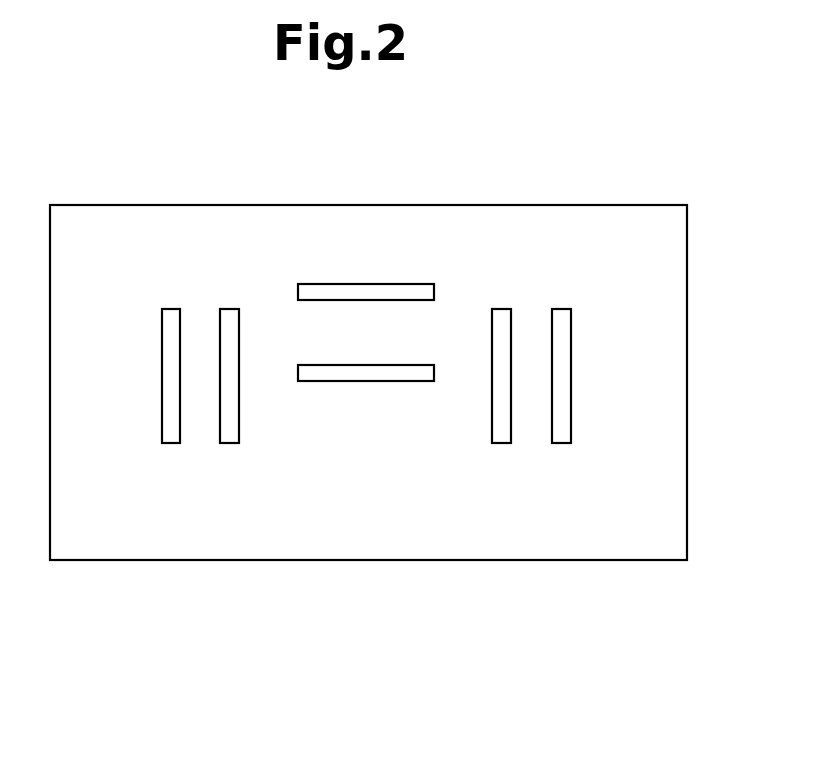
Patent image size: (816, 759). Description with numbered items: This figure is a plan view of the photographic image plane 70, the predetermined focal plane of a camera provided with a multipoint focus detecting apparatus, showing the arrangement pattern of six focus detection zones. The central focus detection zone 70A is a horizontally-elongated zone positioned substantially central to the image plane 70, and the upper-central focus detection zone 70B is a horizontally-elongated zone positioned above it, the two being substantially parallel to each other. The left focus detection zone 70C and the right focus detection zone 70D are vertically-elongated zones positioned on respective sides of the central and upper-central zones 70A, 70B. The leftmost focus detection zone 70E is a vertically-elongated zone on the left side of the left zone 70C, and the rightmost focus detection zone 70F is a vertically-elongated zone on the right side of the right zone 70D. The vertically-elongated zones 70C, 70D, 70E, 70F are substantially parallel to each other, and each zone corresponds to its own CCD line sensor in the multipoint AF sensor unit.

The image plane 70 is at (355, 228).
The central focus detection zone 70A is at (333, 374).
The upper-central focus detection zone 70B is at (395, 290).
The left focus detection zone 70C is at (228, 318).
The right focus detection zone 70D is at (500, 318).
The leftmost focus detection zone 70E is at (169, 318).
The rightmost focus detection zone 70F is at (562, 318).